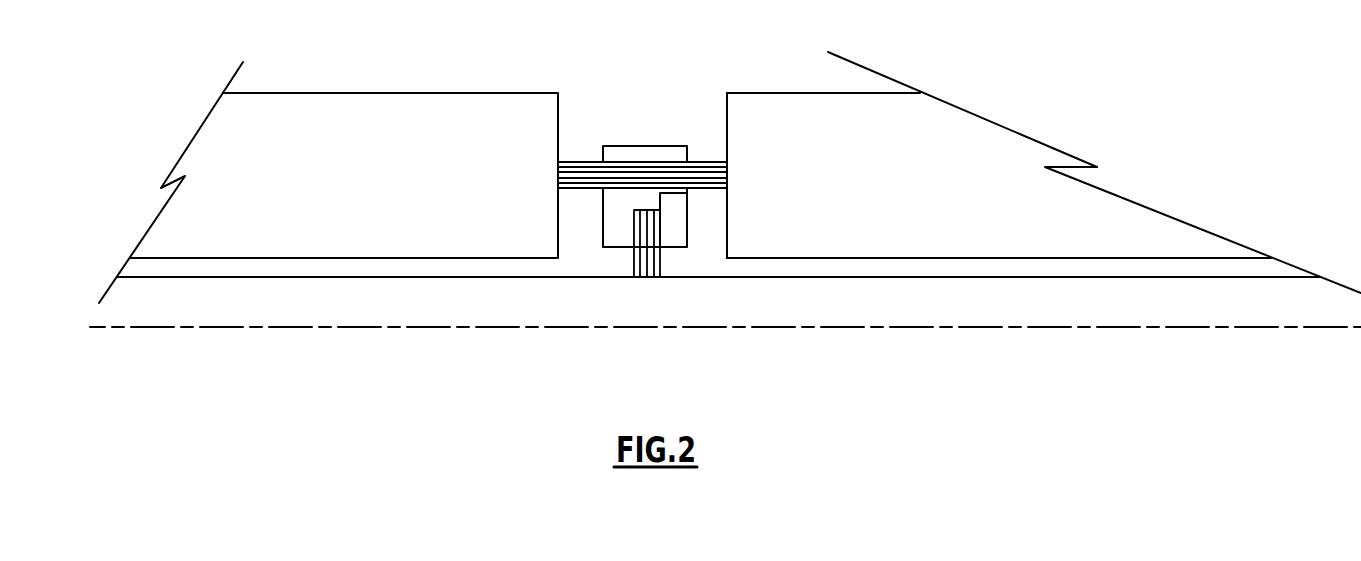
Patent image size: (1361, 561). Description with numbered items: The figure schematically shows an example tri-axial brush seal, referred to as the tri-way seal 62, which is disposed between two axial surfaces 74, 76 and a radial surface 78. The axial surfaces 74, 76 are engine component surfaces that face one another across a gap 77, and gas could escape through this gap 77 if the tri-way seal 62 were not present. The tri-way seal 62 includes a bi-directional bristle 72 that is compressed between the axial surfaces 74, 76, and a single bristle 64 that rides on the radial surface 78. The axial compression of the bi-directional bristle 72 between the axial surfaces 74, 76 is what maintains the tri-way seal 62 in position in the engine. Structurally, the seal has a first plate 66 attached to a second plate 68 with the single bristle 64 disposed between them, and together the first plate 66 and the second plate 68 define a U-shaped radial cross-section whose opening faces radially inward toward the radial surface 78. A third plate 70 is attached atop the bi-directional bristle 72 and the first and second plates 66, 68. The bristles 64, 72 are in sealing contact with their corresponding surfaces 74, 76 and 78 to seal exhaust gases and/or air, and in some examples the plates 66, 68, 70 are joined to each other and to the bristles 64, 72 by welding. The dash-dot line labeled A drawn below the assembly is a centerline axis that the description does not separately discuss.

The tri-way seal 62 is at (634, 214).
The single bristle 64 is at (645, 253).
The first plate 66 is at (627, 200).
The second plate 68 is at (673, 217).
The third plate 70 is at (632, 157).
The bi-directional bristle 72 is at (587, 177).
The axial surface 74 is at (724, 240).
The axial surface 76 is at (562, 126).
The gap 77 is at (640, 123).
The radial surface 78 is at (774, 275).
The axis A is at (1300, 327).